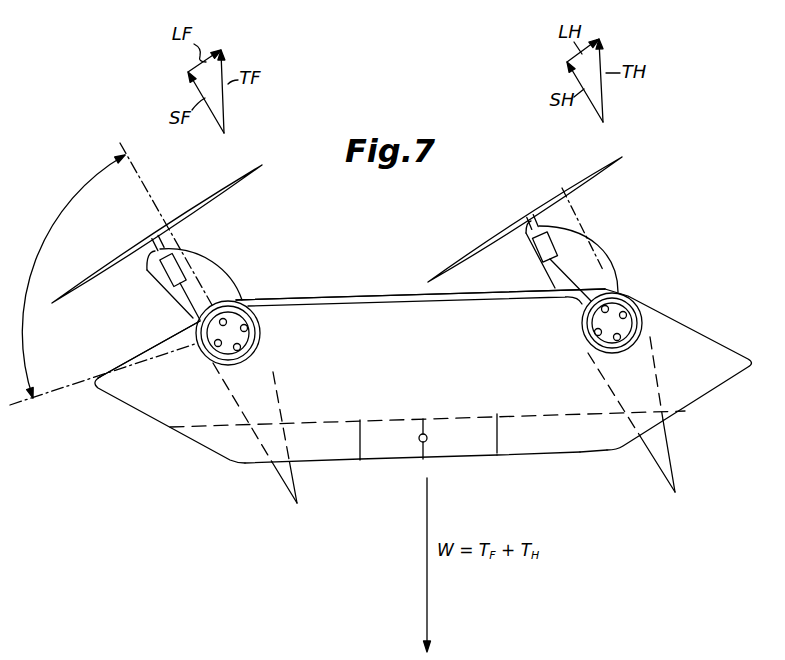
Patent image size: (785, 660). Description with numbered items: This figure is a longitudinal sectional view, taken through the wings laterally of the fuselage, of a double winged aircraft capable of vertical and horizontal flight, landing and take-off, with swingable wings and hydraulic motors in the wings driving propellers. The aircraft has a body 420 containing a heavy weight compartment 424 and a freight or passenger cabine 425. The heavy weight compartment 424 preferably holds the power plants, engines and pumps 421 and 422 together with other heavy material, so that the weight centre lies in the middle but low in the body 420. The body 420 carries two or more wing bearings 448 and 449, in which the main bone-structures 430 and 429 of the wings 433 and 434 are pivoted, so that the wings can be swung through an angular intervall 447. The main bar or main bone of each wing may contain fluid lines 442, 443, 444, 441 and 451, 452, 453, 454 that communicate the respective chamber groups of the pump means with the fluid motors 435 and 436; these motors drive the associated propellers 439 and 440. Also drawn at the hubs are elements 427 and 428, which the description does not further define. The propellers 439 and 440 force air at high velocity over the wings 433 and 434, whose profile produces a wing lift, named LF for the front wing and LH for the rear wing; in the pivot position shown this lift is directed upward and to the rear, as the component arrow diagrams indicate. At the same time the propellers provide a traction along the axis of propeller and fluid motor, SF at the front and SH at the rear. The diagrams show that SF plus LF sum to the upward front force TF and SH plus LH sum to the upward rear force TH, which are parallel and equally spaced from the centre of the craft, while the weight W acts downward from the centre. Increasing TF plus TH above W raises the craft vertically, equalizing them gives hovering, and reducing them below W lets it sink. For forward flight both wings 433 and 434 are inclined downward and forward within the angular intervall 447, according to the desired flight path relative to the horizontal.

The body 420 is at (548, 449).
The power plant, engine or pump 421 is at (468, 452).
The power plant, engine or pump 422 is at (378, 460).
The heavy weight compartment 424 is at (581, 447).
The freight or passenger cabine 425 is at (400, 386).
The left hub bolt 427 is at (220, 360).
The right hub bolt 428 is at (606, 342).
The main bone-structure 429 is at (624, 294).
The main bone-structure 430 is at (258, 340).
The wing 433 is at (207, 287).
The wing 434 is at (600, 262).
The fluid motor 435 is at (165, 278).
The fluid motor 436 is at (533, 257).
The propeller 439 is at (80, 288).
The propeller 440 is at (486, 248).
The fluid line 441 is at (252, 312).
The fluid line 442 is at (205, 352).
The fluid line 443 is at (260, 326).
The fluid line 444 is at (252, 352).
The angular intervall 447 is at (62, 222).
The wing bearing 448 is at (240, 303).
The wing bearing 449 is at (580, 328).
The fluid line 451 is at (608, 302).
The fluid line 452 is at (630, 322).
The fluid line 453 is at (626, 336).
The fluid line 454 is at (597, 333).